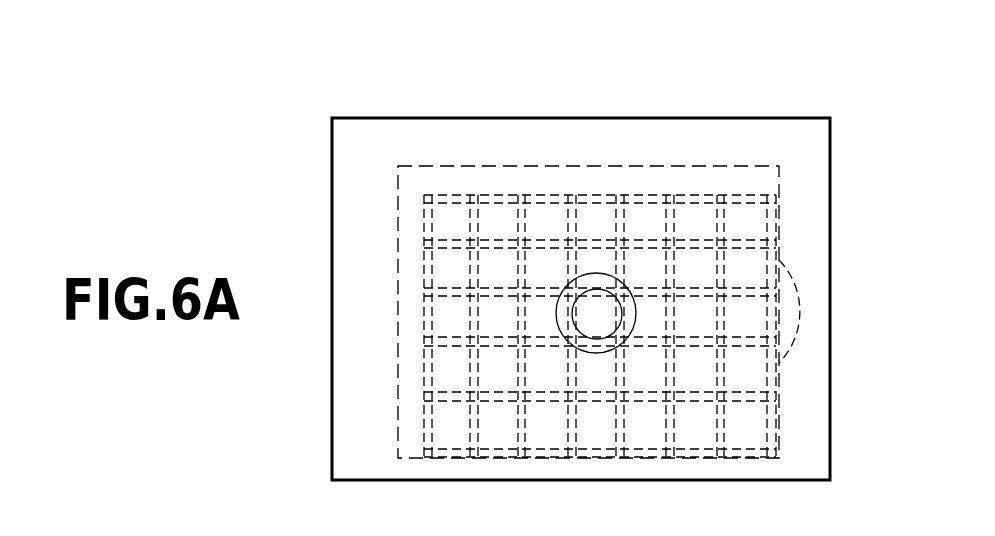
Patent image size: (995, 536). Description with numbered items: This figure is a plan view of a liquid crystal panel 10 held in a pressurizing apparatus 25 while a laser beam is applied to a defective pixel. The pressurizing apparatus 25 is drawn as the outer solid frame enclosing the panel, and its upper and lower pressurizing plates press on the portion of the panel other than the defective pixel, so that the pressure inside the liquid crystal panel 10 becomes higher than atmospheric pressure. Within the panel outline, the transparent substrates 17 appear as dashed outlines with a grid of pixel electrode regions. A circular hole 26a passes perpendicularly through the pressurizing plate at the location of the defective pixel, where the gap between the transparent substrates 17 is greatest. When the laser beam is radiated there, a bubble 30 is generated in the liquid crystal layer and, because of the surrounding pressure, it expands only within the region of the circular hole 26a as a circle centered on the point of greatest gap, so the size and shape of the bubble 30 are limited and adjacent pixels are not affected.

The pressurizing apparatus 25 is at (333, 117).
The liquid crystal panel 10 is at (770, 168).
The transparent substrates 17 is at (497, 197).
The bubble 30 is at (597, 288).
The circular hole 26a is at (634, 335).